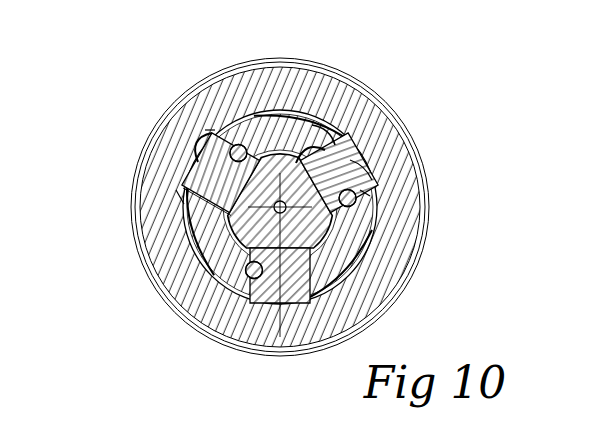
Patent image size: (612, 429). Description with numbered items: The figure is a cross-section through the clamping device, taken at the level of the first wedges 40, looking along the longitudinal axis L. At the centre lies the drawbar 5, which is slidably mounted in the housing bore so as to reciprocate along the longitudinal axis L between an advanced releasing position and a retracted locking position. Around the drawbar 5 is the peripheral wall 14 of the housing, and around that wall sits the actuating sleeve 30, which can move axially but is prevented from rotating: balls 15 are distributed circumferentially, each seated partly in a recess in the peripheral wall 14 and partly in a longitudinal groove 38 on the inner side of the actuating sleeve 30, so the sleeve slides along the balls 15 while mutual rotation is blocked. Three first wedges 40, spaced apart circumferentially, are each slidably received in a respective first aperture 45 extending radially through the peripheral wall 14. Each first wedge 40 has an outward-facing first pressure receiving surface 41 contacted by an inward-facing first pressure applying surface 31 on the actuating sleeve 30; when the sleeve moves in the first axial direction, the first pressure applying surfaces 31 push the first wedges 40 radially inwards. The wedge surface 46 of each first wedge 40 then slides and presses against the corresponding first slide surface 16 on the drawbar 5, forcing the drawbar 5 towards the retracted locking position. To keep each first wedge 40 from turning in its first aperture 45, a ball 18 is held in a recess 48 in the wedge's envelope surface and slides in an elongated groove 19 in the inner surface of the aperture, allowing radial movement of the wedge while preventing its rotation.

The drawbar 5 is at (238, 222).
The peripheral wall 14 is at (342, 258).
The balls 15 is at (178, 197).
The first slide surface 16 is at (355, 150).
The ball 18 is at (350, 200).
The elongated groove 19 is at (368, 193).
The actuating sleeve 30 is at (205, 307).
The first pressure applying surfaces 31 is at (203, 157).
The longitudinal groove 38 is at (178, 190).
The first wedges 40 is at (268, 298).
The first pressure receiving surfaces 41 is at (203, 158).
The first aperture 45 is at (326, 152).
The wedge surface 46 is at (296, 163).
The recess 48 is at (350, 166).
The longitudinal axis L is at (275, 210).